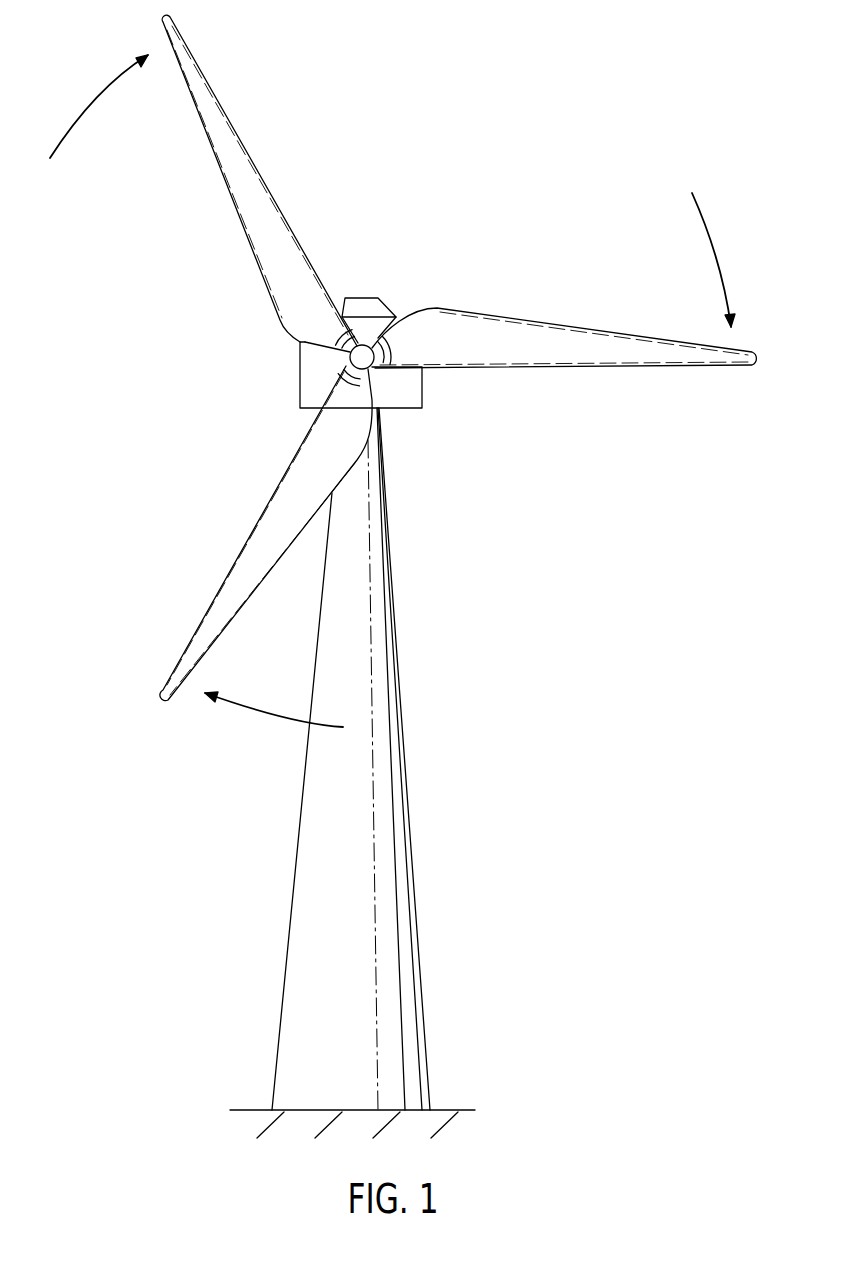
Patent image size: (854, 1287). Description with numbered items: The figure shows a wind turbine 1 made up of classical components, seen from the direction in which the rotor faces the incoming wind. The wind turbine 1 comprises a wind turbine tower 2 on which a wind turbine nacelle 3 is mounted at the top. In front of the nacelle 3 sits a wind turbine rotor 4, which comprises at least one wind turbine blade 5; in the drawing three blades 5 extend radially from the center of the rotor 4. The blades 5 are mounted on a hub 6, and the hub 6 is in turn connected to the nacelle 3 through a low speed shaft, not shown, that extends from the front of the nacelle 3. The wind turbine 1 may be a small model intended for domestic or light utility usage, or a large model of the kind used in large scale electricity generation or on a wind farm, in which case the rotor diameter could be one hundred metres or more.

The wind turbine 1 is at (458, 576).
The wind turbine tower 2 is at (410, 773).
The wind turbine nacelle 3 is at (414, 390).
The wind turbine rotor 4 is at (458, 357).
The wind turbine blade 5 is at (650, 352).
The hub 6 is at (362, 357).